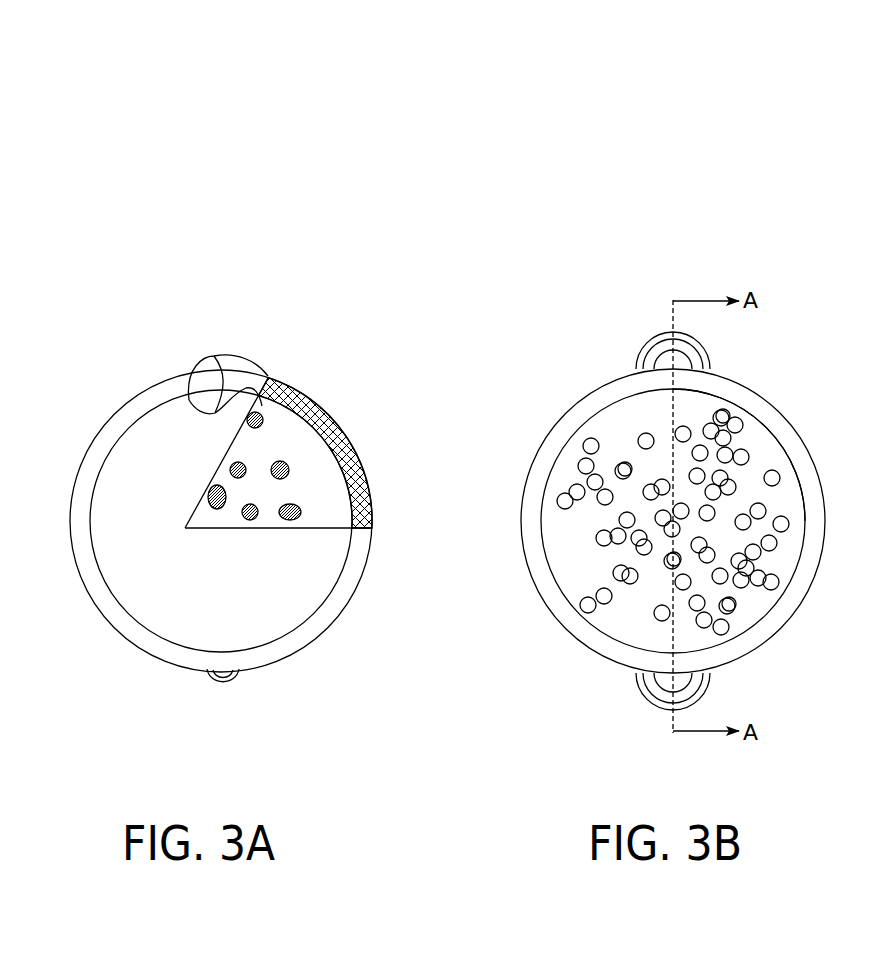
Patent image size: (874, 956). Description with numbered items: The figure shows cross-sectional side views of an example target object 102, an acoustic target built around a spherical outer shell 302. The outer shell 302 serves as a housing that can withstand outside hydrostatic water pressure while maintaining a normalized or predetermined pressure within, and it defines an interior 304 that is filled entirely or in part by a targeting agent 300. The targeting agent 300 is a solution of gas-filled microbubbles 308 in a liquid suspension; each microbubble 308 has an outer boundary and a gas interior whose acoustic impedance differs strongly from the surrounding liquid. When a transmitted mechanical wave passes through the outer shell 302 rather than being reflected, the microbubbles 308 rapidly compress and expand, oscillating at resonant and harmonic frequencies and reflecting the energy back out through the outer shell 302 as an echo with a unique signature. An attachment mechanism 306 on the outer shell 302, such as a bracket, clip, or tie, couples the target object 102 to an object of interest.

In FIG. 3A, the target object 102 is at (110, 247).
In FIG. 3A, the targeting agent 300 is at (260, 507).
In FIG. 3B, the targeting agent 300 is at (742, 477).
In FIG. 3A, the outer shell 302 is at (120, 428).
In FIG. 3B, the outer shell 302 is at (545, 615).
In FIG. 3A, the interior 304 is at (270, 440).
In FIG. 3B, the interior 304 is at (615, 443).
In FIG. 3A, the attachment mechanism 306 is at (220, 353).
In FIG. 3B, the attachment mechanism 306 is at (652, 342).
In FIG. 3A, the microbubble 308 is at (290, 460).
In FIG. 3B, the microbubble 308 is at (785, 470).